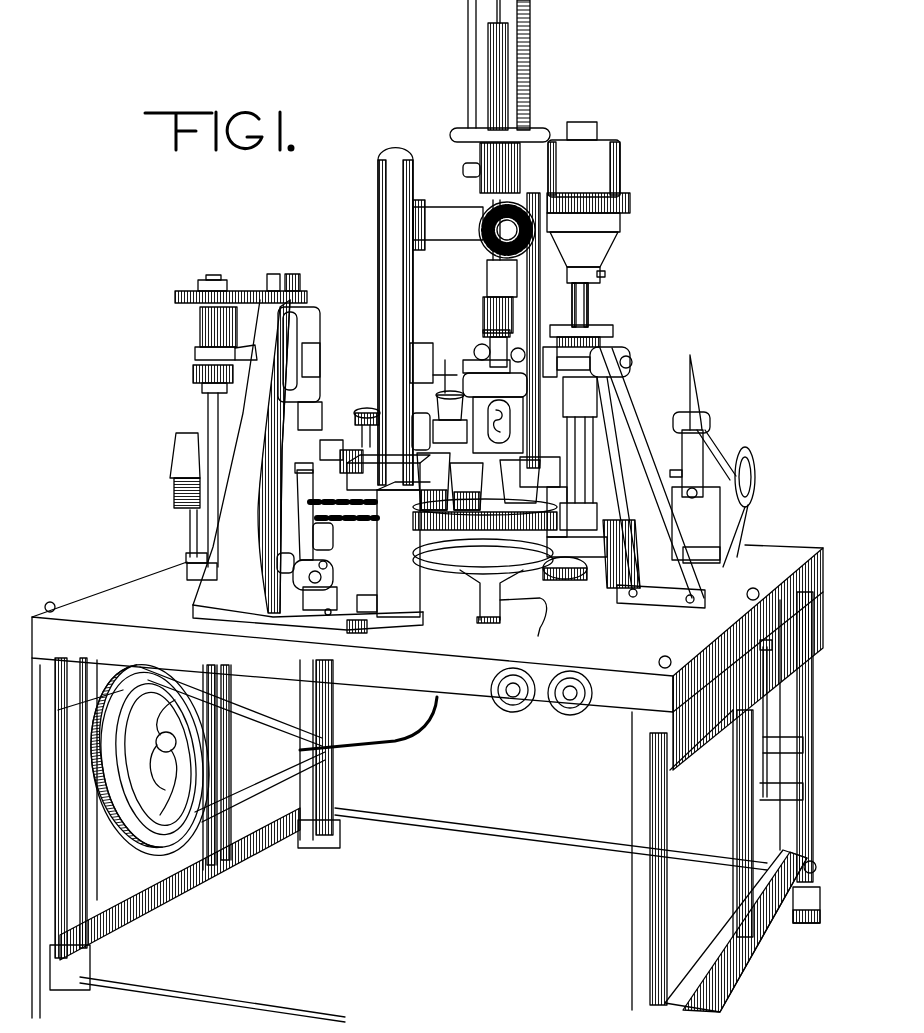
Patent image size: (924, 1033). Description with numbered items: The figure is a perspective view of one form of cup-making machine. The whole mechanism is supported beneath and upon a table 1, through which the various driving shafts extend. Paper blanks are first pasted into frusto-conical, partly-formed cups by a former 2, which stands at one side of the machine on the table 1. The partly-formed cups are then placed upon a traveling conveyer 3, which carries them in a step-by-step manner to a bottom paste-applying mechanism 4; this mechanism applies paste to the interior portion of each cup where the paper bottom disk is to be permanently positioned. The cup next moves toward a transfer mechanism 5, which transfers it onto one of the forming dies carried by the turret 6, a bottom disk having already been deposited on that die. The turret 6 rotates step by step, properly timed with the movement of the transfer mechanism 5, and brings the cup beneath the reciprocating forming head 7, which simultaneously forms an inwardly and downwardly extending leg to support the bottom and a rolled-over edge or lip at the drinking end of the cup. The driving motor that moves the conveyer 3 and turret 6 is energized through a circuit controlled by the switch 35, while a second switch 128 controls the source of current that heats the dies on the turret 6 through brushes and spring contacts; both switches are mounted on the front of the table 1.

The table 1 is at (147, 583).
The former 2 is at (723, 467).
The traveling conveyer 3 is at (172, 502).
The bottom paste-applying mechanism 4 is at (317, 393).
The transfer mechanism 5 is at (365, 410).
The turret 6 is at (557, 500).
The reciprocating forming head 7 is at (523, 437).
The switch 35 is at (507, 694).
The switch 128 is at (570, 702).